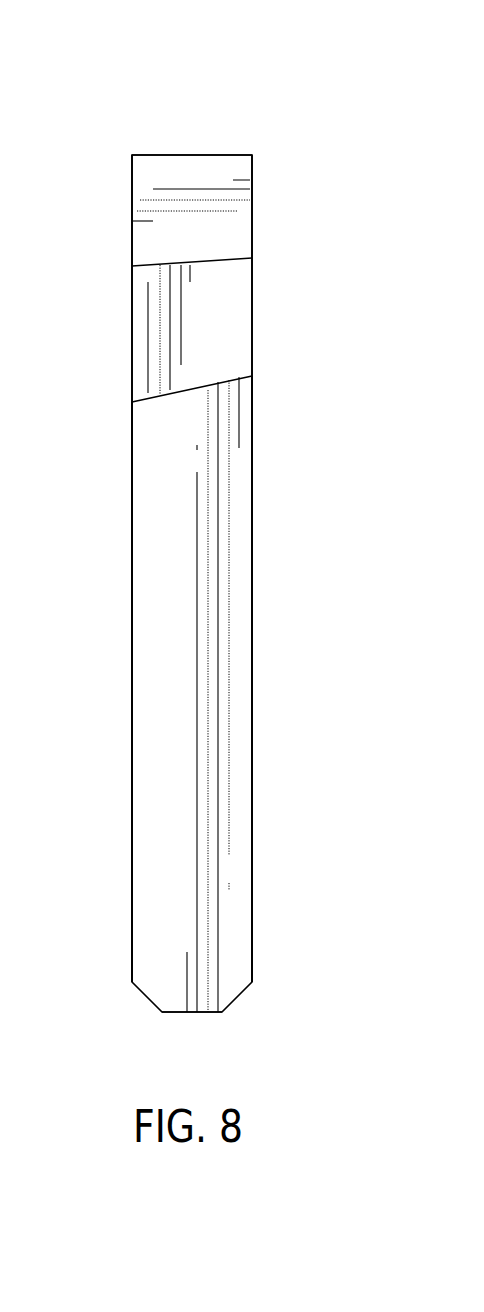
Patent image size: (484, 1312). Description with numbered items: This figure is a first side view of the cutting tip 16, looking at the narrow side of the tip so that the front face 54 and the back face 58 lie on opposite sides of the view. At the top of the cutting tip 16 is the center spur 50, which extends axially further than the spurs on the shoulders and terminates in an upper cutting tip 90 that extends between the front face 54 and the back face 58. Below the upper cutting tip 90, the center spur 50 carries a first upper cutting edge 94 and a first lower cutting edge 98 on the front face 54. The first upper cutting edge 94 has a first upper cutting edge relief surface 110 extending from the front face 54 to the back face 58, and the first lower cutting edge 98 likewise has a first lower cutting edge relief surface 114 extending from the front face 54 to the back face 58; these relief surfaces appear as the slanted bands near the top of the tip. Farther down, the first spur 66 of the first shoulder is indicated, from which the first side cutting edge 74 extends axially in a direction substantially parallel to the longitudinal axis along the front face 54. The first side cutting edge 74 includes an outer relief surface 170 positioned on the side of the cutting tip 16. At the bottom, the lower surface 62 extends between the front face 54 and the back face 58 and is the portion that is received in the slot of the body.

The cutting tip 16 is at (120, 53).
The center spur 50 is at (246, 106).
The upper cutting tip 90 is at (193, 155).
The first upper cutting edge 94 is at (252, 187).
The first upper cutting edge relief surface 110 is at (147, 233).
The first lower cutting edge 98 is at (252, 295).
The first lower cutting edge relief surface 114 is at (147, 330).
The first spur 66 is at (310, 402).
The back face 58 is at (90, 659).
The front face 54 is at (290, 659).
The first side cutting edge 74 is at (252, 732).
The outer relief surface 170 is at (147, 845).
The lower surface 62 is at (197, 1012).